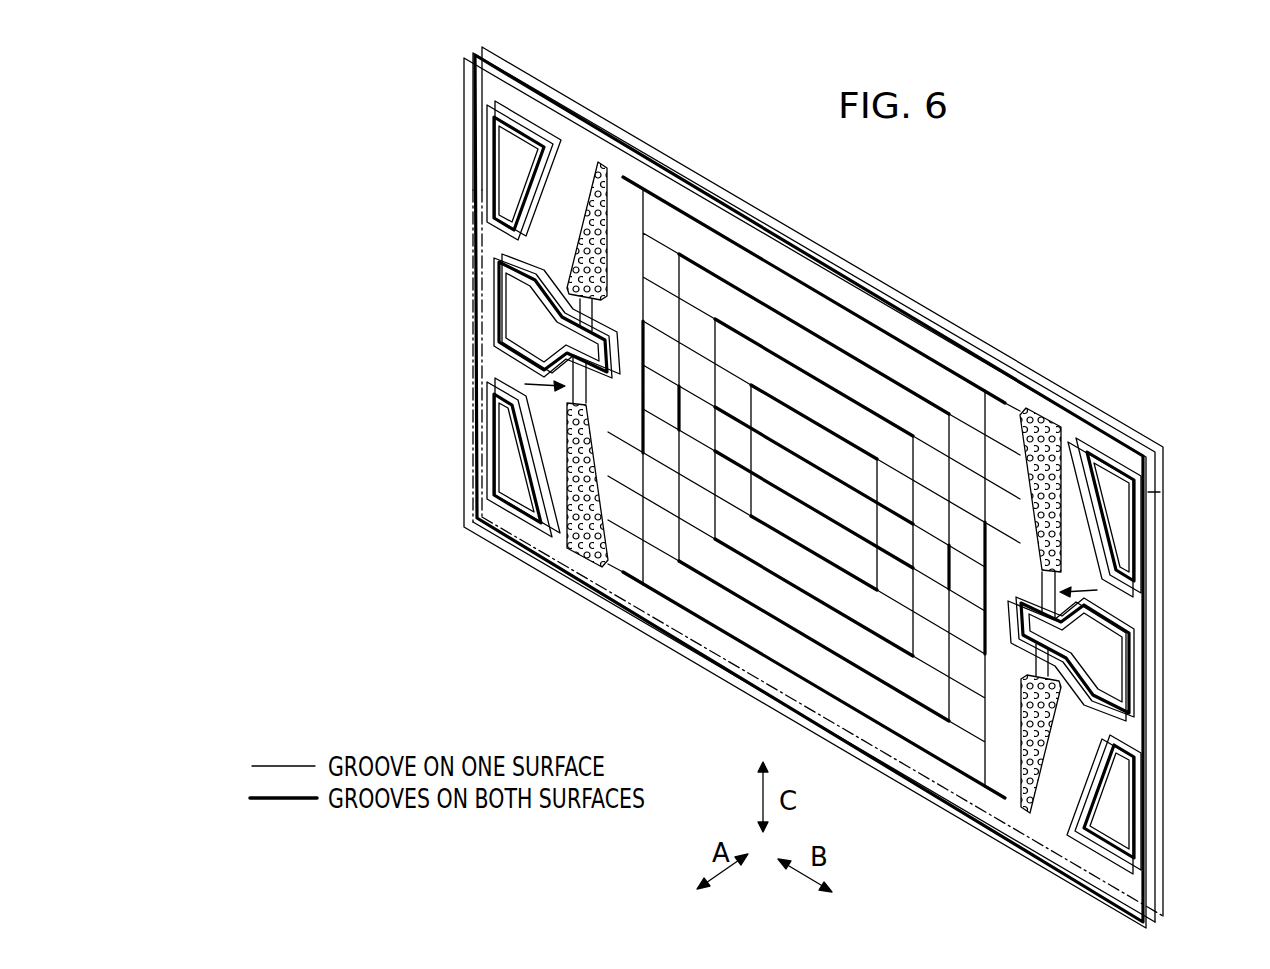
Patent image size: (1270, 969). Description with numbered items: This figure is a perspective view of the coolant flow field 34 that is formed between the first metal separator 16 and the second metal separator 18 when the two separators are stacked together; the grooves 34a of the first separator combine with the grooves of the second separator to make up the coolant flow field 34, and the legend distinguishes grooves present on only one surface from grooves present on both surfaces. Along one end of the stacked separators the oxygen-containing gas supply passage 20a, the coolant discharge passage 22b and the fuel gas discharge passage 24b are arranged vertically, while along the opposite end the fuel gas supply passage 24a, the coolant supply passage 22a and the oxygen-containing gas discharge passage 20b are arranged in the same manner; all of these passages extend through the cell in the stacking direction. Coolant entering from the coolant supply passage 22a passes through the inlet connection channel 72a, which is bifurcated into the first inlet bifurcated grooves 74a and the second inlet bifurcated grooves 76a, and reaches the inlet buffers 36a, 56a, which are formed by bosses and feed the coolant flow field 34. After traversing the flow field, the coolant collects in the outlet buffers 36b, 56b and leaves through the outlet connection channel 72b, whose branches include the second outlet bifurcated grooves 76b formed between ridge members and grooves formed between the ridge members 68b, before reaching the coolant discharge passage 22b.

The first metal separator 16 is at (1162, 468).
The second metal separator 18 is at (1168, 500).
The oxygen-containing gas supply passage 20a is at (512, 165).
The oxygen-containing gas discharge passage 20b is at (1111, 788).
The coolant supply passage 22a is at (1071, 659).
The coolant discharge passage 22b is at (557, 316).
The fuel gas supply passage 24a is at (1113, 545).
The fuel gas discharge passage 24b is at (515, 470).
The coolant flow field 34 is at (984, 294).
The grooves 34a is at (878, 369).
The inlet buffer 36a is at (1022, 490).
The outlet buffer 36b is at (606, 555).
The inlet buffer 56a is at (1022, 764).
The outlet buffer 56b is at (605, 248).
The ridge members 68b is at (590, 316).
The inlet connection channel 72a is at (1100, 590).
The outlet connection channel 72b is at (522, 383).
The first inlet bifurcated grooves 74a is at (1047, 665).
The second inlet bifurcated grooves 76a is at (1028, 581).
The second outlet bifurcated grooves 76b is at (588, 410).